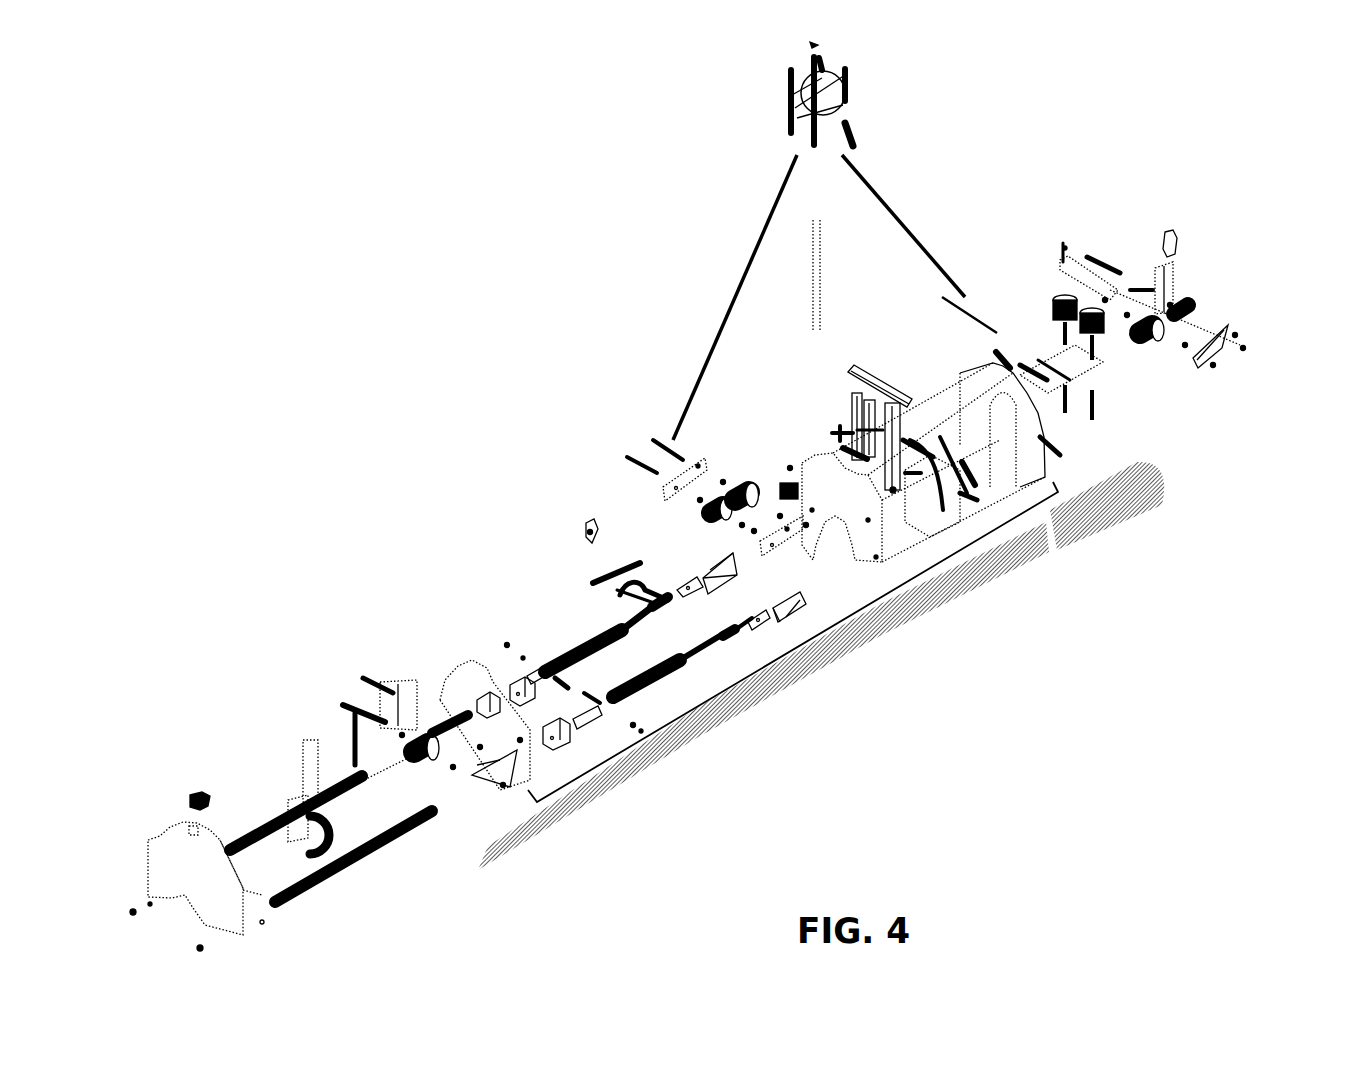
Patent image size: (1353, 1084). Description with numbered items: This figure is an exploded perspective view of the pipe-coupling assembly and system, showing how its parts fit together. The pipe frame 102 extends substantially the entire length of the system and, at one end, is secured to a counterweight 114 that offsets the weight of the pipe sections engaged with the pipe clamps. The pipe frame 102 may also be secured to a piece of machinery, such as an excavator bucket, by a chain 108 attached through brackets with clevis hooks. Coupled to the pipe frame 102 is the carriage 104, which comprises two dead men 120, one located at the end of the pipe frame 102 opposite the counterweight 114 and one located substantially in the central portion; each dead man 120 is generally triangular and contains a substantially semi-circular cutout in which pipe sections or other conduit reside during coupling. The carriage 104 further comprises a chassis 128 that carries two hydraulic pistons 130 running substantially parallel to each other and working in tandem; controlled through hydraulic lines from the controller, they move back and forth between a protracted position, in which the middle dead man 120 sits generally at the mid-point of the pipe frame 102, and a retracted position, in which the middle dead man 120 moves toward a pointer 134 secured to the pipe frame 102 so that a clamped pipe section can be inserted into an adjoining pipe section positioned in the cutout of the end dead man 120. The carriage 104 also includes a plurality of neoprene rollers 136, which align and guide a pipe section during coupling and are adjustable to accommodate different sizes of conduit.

The pipe frame 102 is at (947, 602).
The carriage 104 is at (797, 648).
The chain 108 is at (870, 187).
The counterweight 114 is at (1113, 523).
The dead man 120 is at (172, 840).
The chassis 128 is at (572, 643).
The hydraulic piston 130 is at (710, 657).
The pointer 134 is at (845, 80).
The neoprene roller 136 is at (453, 717).